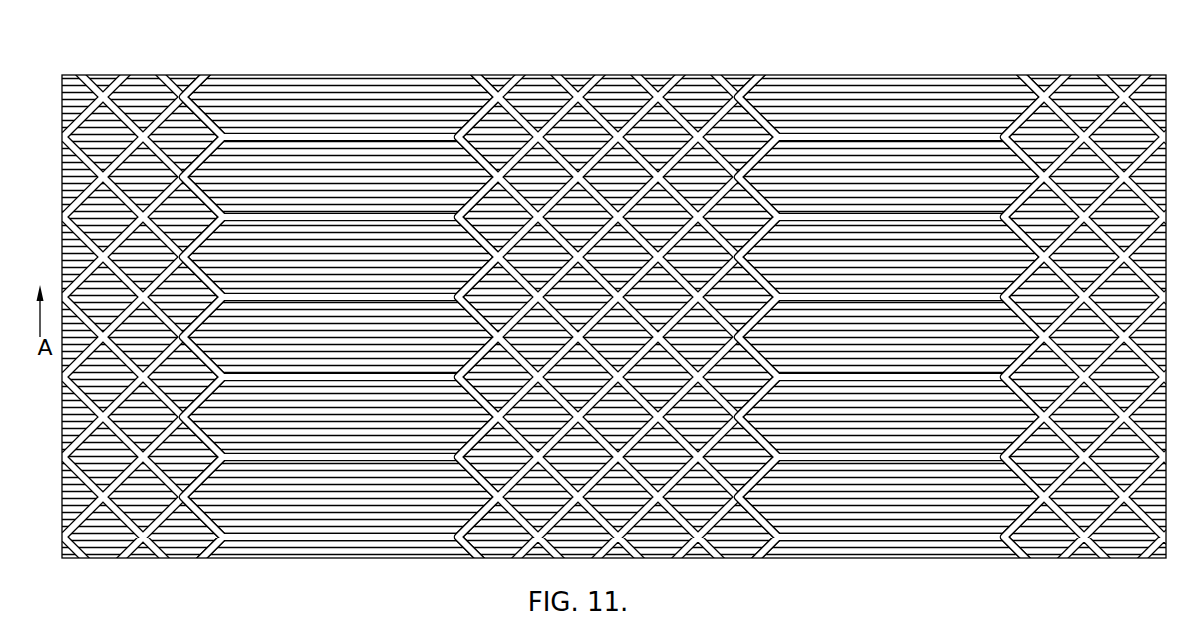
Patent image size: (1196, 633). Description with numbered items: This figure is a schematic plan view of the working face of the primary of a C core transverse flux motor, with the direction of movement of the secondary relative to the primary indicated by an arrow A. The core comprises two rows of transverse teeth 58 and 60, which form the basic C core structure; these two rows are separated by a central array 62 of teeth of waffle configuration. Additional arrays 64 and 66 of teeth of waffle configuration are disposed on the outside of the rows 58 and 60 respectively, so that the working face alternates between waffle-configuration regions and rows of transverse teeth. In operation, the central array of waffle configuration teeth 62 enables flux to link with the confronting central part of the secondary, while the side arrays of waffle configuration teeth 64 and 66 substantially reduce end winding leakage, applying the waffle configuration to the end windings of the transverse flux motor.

The row of transverse teeth 58 is at (442, 88).
The row of transverse teeth 60 is at (912, 90).
The array of teeth of waffle configuration 62 is at (610, 92).
The array of teeth of waffle configuration 64 is at (150, 88).
The array of teeth of waffle configuration 66 is at (1083, 95).